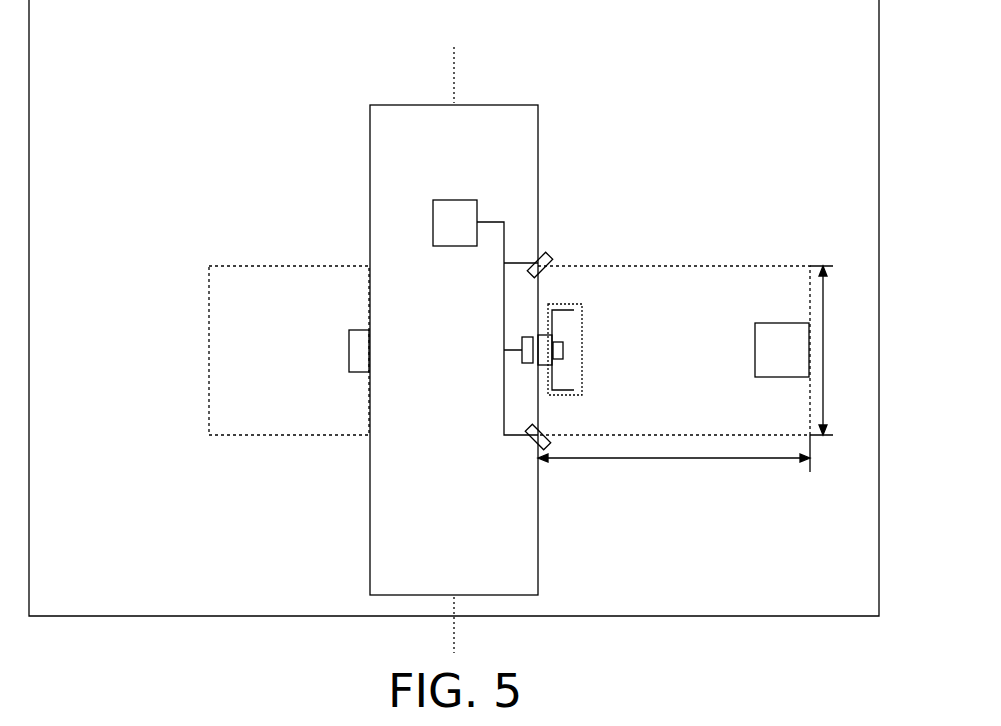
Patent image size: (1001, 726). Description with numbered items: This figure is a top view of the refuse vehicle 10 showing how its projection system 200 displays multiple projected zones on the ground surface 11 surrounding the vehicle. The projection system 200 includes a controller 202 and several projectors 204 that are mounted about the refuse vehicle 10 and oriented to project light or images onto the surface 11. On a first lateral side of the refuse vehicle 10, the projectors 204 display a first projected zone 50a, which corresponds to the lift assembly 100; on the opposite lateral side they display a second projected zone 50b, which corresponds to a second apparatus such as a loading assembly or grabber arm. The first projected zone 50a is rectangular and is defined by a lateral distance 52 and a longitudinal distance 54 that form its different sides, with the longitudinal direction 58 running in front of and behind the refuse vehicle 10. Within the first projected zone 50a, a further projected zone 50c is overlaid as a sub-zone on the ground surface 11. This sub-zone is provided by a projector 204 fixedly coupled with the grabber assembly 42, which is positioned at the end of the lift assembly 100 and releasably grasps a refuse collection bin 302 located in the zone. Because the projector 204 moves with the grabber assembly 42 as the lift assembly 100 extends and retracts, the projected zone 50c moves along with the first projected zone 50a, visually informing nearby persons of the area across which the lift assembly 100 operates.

The surface 11 is at (515, 25).
The longitudinal direction 58 is at (456, 77).
The refuse vehicle 10 is at (369, 510).
The projection system 200 is at (453, 161).
The controller 202 is at (455, 199).
The projectors 204 is at (547, 255).
The first projected zone 50a is at (785, 301).
The second projected zone 50b is at (271, 391).
The projected zone 50c is at (585, 352).
The grabber assembly 42 is at (560, 394).
The lift assembly 100 is at (596, 367).
The refuse collection bin 302 is at (780, 378).
The longitudinal distance 54 is at (823, 350).
The lateral distance 52 is at (675, 458).